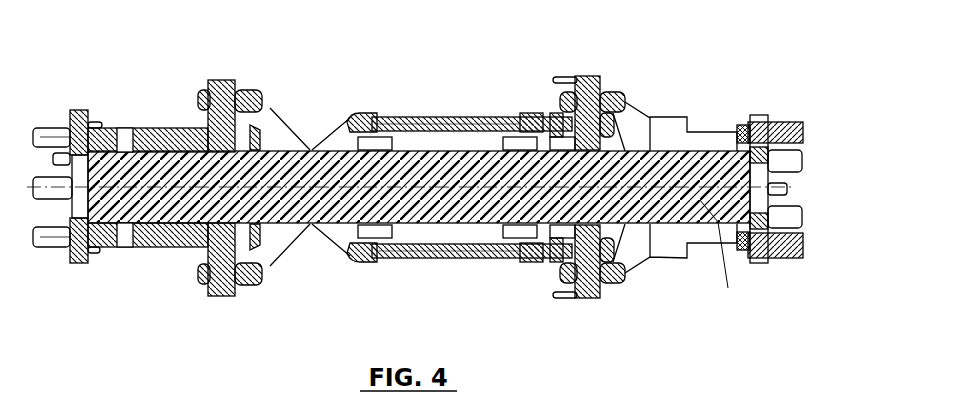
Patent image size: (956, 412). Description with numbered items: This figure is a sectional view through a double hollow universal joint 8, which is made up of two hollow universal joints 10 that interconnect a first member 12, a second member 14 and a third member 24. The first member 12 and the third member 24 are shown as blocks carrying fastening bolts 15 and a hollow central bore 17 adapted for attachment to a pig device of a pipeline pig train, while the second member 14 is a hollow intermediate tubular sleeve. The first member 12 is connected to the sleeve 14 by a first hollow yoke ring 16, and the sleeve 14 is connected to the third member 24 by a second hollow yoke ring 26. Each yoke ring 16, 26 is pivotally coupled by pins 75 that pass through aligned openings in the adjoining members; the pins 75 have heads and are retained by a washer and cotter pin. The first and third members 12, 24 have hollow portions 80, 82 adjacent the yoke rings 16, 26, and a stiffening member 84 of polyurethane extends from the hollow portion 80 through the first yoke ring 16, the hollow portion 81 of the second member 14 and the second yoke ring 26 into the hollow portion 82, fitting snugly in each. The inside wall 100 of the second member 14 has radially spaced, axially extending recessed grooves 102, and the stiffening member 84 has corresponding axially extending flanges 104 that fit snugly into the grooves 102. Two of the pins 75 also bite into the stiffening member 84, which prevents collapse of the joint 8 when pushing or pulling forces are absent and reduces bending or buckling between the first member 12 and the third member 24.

The double hollow universal joint 8 is at (456, 86).
The hollow universal joint 10 is at (297, 107).
The first member 12 is at (153, 248).
The second member 14 is at (432, 259).
The fastening bolts 15 is at (804, 164).
The first hollow yoke ring 16 is at (272, 105).
The hollow central bore 17 is at (788, 190).
The third member 24 is at (672, 262).
The second hollow yoke ring 26 is at (638, 108).
The pins 75 is at (233, 80).
The hollow portion of first member 80 is at (152, 157).
The hollow portion of second member 81 is at (477, 213).
The hollow portion of third member 82 is at (705, 158).
The stiffening member 84 is at (729, 254).
The inside wall 100 is at (460, 150).
The recessed grooves 102 is at (380, 110).
The axially extending flanges 104 is at (523, 122).